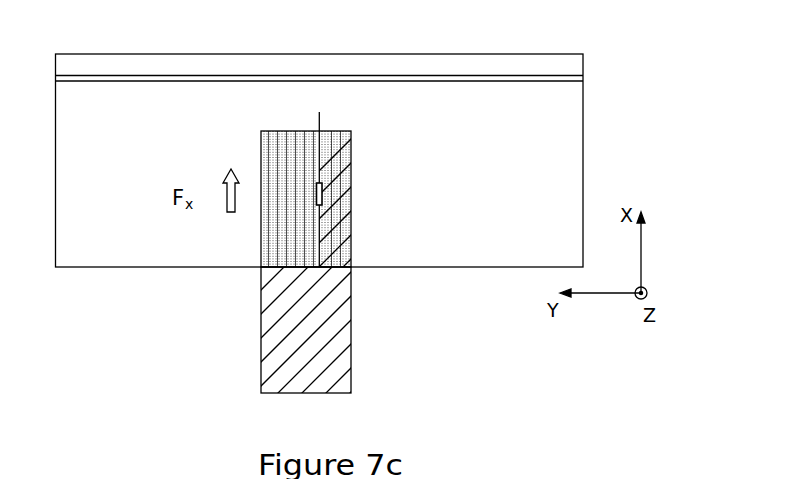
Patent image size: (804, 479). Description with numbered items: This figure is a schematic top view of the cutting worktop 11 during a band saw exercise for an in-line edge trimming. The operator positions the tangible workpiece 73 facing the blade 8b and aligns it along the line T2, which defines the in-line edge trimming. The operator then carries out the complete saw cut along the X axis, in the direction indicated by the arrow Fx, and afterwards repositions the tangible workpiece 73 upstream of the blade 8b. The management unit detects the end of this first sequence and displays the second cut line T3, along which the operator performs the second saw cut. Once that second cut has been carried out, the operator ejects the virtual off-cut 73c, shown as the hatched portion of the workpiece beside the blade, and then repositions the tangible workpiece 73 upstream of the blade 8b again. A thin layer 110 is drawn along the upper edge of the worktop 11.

The cutting worktop 11 is at (584, 138).
The surface layer 110 is at (473, 78).
The tangible workpiece 73 is at (358, 184).
The virtual off-cut 73c is at (340, 232).
The second cut line T3 is at (333, 270).
The in-line edge trimming line T2 is at (323, 151).
The blade 8b is at (316, 190).